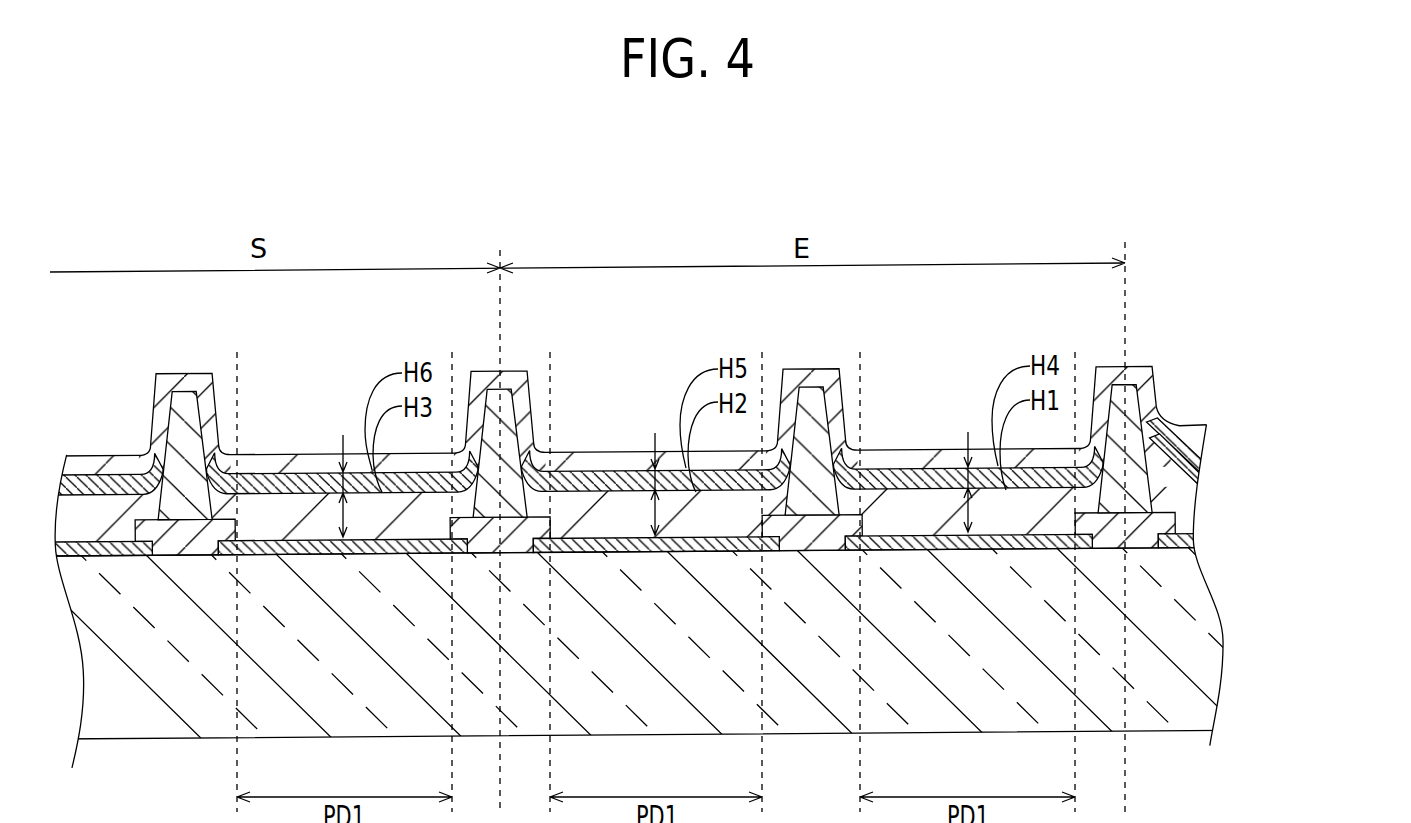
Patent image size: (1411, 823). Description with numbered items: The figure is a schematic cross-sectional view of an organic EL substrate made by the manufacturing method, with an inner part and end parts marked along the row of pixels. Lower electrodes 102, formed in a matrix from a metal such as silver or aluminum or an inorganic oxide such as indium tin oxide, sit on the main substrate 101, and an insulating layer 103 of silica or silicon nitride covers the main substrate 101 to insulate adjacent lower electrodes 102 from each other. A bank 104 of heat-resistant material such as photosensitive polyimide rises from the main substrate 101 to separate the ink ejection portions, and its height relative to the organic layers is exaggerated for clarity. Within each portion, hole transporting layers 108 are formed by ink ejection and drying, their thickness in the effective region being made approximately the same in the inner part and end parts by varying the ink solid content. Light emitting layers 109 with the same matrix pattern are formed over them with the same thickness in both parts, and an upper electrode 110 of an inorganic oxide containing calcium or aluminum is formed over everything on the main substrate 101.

The main substrate 101 is at (1197, 637).
The lower electrodes 102 is at (1190, 541).
The insulating layer 103 is at (1190, 519).
The bank 104 is at (1122, 378).
The hole transporting layers 108 is at (1187, 503).
The light emitting layers 109 is at (1197, 475).
The upper electrode 110 is at (1183, 428).